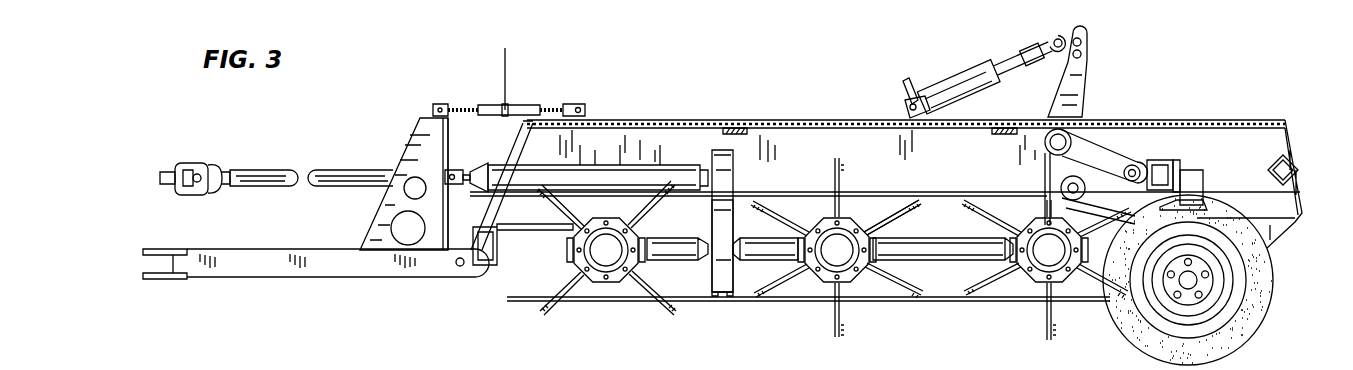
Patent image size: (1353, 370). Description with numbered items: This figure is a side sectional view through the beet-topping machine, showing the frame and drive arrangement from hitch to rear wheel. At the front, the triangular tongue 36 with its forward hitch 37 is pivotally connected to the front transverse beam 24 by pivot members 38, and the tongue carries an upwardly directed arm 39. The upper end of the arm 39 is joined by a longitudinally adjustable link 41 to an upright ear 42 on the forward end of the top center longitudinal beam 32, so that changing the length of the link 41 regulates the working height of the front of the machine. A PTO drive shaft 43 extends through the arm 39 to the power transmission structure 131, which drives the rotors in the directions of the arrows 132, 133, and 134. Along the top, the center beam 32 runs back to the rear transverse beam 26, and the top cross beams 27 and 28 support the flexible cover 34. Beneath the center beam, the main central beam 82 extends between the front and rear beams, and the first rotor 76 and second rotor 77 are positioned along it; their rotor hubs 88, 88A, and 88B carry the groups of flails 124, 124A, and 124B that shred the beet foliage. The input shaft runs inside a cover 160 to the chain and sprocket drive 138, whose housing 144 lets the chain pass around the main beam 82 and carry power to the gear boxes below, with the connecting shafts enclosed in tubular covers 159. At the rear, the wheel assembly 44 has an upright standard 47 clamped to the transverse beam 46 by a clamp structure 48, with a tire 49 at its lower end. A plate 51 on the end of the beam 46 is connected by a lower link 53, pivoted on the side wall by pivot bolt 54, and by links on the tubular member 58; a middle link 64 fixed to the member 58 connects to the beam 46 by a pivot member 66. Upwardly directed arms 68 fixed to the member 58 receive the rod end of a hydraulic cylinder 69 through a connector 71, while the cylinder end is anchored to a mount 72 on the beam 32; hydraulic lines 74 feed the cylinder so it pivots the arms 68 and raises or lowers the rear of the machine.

The front transverse beam 24 is at (507, 262).
The rear transverse beam 26 is at (1298, 166).
The top cross beam 27 is at (765, 118).
The top cross beam 28 is at (995, 130).
The top center longitudinal beam 32 is at (922, 127).
The flexible cover 34 is at (1207, 118).
The triangular tongue 36 is at (287, 263).
The forward hitch 37 is at (172, 279).
The pivot member 38 is at (460, 268).
The upwardly directed arm 39 is at (408, 143).
The longitudinally adjustable link 41 is at (517, 103).
The upright ear 42 is at (587, 113).
The PTO drive shaft 43 is at (268, 178).
The wheel assembly 44 is at (1283, 292).
The transverse beam 46 is at (1160, 168).
The upright standard 47 is at (1203, 177).
The clamp structure 48 is at (1180, 165).
The tire 49 is at (1257, 328).
The plate 51 is at (1207, 208).
The lower link 53 is at (1093, 195).
The pivot bolt 54 is at (1062, 188).
The tubular member 58 is at (1045, 142).
The middle link 64 is at (1110, 157).
The pivot member 66 is at (1133, 165).
The upwardly directed arm 68 is at (1085, 63).
The hydraulic cylinder 69 is at (962, 70).
The connector 71 is at (1072, 23).
The mount 72 is at (905, 110).
The hydraulic lines 74 is at (912, 77).
The first rotor 76 is at (557, 320).
The second rotor 77 is at (803, 340).
The main central beam 82 is at (883, 200).
The rotor hub 88 is at (827, 230).
The rotor hub 88A is at (620, 215).
The rotor hub 88B is at (1032, 230).
The flails 124 is at (832, 330).
The tine set 124A is at (566, 288).
The tine set 124B is at (1120, 297).
The power transmission structure 131 is at (697, 158).
The arrow 132 is at (647, 323).
The arrow 133 is at (857, 325).
The arrow 134 is at (1027, 323).
The chain and sprocket drive 138 is at (722, 204).
The housing 144 is at (733, 163).
The tubular cover 159 is at (683, 253).
The cover 160 is at (597, 172).